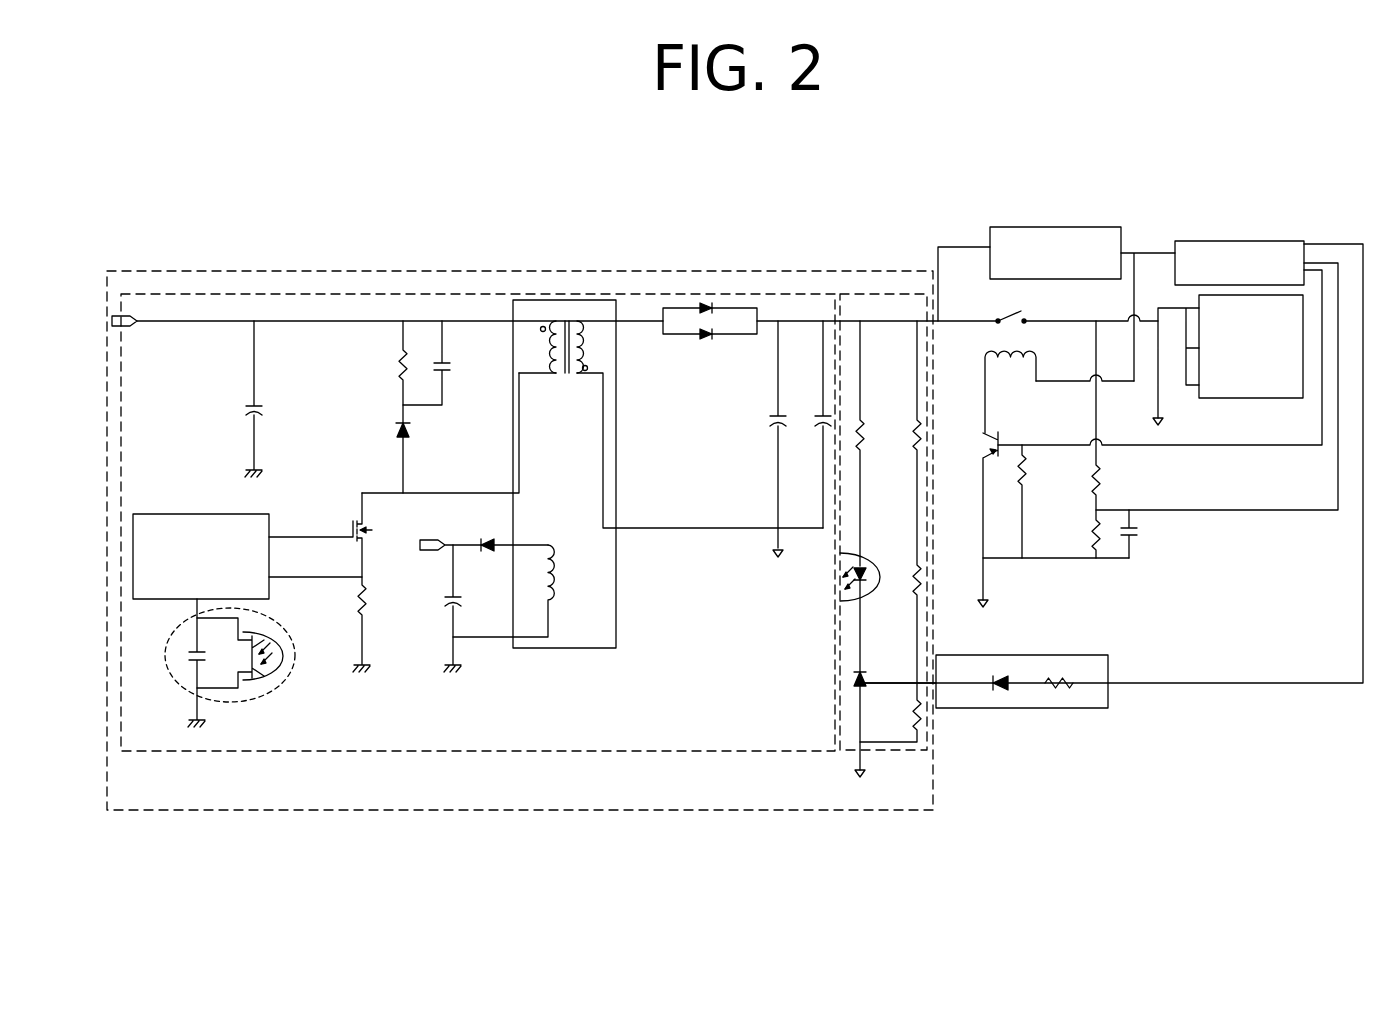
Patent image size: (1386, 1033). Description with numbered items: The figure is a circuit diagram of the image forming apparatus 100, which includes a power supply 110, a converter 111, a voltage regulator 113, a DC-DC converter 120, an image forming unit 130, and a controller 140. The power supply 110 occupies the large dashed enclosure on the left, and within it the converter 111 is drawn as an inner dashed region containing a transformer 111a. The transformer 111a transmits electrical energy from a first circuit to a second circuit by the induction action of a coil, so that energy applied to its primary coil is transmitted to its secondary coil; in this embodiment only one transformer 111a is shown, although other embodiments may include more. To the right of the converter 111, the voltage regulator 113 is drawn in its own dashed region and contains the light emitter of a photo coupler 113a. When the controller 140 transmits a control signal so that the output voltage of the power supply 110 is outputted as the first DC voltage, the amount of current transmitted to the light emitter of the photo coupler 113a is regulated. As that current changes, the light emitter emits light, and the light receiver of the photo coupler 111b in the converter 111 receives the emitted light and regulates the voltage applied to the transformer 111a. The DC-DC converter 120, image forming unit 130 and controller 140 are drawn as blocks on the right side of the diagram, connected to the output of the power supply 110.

The image forming apparatus 100 is at (821, 158).
The power supply 110 is at (527, 271).
The converter 111 is at (680, 751).
The transformer 111a is at (565, 648).
The photo coupler 111b is at (238, 700).
The voltage regulator 113 is at (888, 751).
The photo coupler 113a is at (862, 555).
The DC-DC converter 120 is at (1066, 227).
The image forming unit 130 is at (1250, 398).
The controller 140 is at (1240, 241).